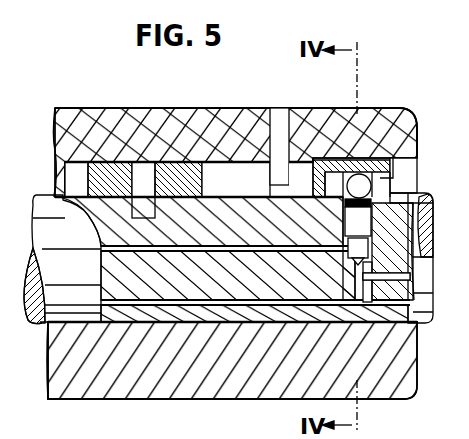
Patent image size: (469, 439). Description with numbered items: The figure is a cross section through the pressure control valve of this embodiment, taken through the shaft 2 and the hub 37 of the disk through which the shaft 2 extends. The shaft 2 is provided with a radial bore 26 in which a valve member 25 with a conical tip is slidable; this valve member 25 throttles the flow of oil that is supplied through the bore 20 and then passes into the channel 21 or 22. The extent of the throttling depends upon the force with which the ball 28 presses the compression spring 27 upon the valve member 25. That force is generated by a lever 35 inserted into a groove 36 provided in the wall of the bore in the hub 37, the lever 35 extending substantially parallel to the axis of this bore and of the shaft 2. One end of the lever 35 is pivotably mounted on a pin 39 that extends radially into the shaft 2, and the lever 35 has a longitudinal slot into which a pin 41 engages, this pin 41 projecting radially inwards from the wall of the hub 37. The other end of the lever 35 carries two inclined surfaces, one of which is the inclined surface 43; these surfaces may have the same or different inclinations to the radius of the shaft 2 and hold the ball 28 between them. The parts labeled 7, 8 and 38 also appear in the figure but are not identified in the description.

The shaft 2 is at (50, 228).
The housing part 7 is at (12, 150).
The housing part 8 is at (12, 128).
The bore 20 is at (120, 307).
The channel 21 is at (230, 190).
The channel 22 is at (258, 250).
The valve member 25 is at (356, 223).
The radial bore 26 is at (386, 223).
The compression spring 27 is at (323, 163).
The ball 28 is at (360, 181).
The lever 35 is at (54, 108).
The groove 36 is at (140, 186).
The hub 37 is at (95, 376).
The sealing ring 38 is at (163, 154).
The pin 39 is at (107, 175).
The pin 41 is at (277, 133).
The inclined surface 43 is at (384, 180).